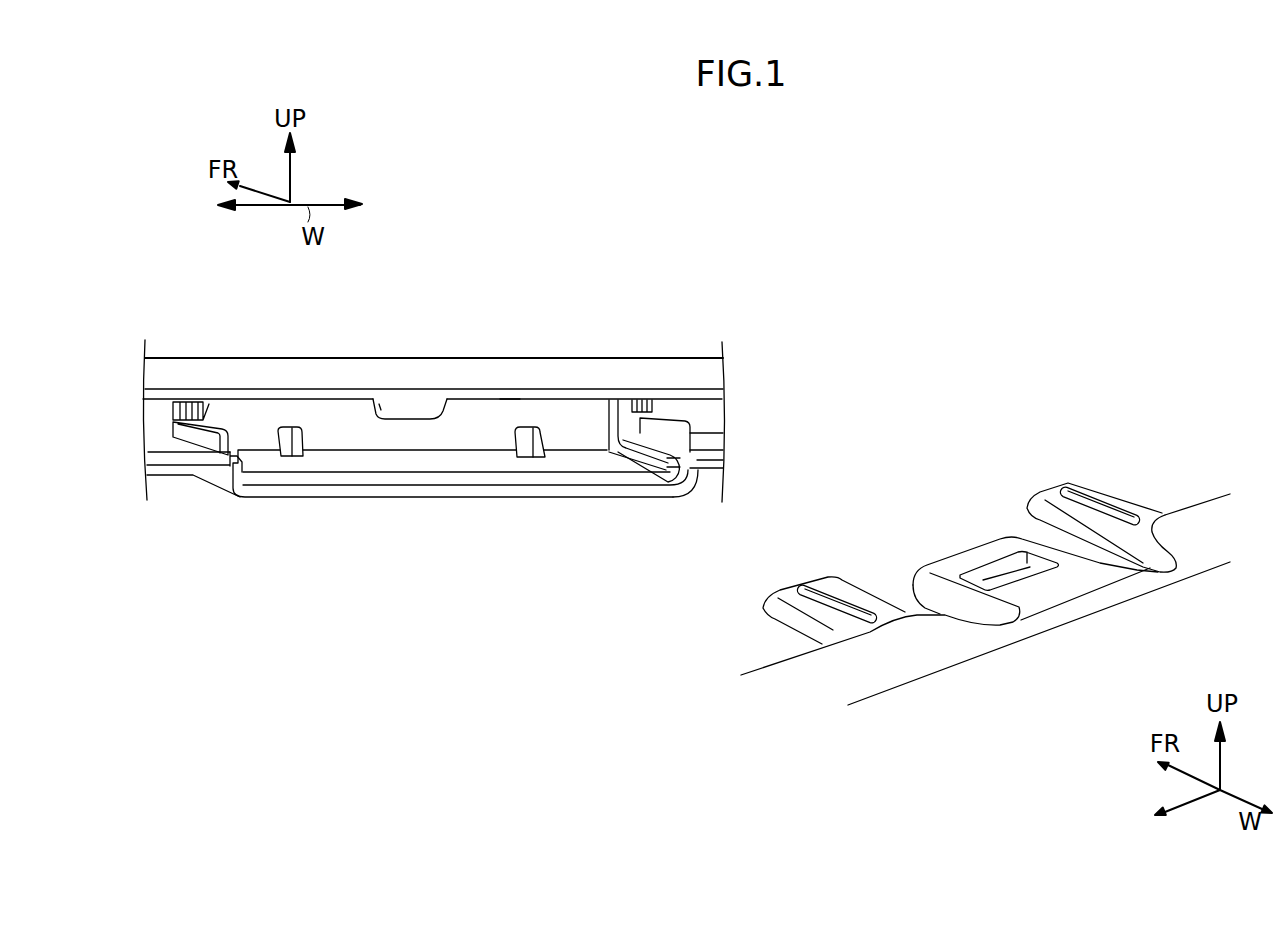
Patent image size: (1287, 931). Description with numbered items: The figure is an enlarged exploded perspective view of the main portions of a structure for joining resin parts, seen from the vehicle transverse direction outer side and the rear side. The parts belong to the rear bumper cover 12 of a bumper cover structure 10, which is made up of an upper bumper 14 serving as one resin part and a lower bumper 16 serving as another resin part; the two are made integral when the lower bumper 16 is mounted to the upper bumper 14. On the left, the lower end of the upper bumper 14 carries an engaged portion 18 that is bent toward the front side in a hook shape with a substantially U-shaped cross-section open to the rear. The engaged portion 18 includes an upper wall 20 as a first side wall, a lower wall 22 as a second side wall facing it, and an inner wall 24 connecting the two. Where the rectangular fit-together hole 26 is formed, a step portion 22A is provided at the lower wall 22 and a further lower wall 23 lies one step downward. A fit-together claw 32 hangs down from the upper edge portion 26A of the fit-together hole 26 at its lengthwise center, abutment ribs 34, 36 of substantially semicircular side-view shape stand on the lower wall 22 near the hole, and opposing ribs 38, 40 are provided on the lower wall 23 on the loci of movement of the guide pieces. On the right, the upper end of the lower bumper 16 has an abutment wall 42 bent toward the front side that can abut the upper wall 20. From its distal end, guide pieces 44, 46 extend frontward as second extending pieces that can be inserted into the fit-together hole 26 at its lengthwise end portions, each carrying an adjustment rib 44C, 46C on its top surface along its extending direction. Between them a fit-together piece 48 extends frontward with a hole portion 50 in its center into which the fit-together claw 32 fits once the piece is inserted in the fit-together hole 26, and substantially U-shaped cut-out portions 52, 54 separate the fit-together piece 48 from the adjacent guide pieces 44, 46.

The bumper cover structure 10 is at (1039, 498).
The rear bumper cover 12 is at (1095, 332).
The upper bumper 14 is at (722, 296).
The lower bumper 16 is at (1093, 662).
The engaged portion 18 is at (742, 405).
The upper wall 20 is at (579, 395).
The lower wall 22 is at (157, 438).
The step portion 22A is at (223, 485).
The lower wall 23 is at (295, 478).
The inner wall 24 is at (156, 414).
The fit-together hole 26 is at (603, 424).
The upper edge portion 26A is at (509, 409).
The fit-together claw 32 is at (418, 414).
The abutment rib 34 is at (203, 433).
The abutment rib 36 is at (674, 430).
The opposing rib 38 is at (305, 438).
The opposing rib 40 is at (515, 438).
The abutment wall 42 is at (1198, 513).
The guide piece 44 is at (792, 595).
The adjustment rib 44C is at (828, 595).
The guide piece 46 is at (1052, 498).
The adjustment rib 46C is at (1073, 493).
The fit-together piece 48 is at (947, 563).
The hole portion 50 is at (995, 571).
The cut-out portion 52 is at (995, 622).
The cut-out portion 54 is at (1148, 556).